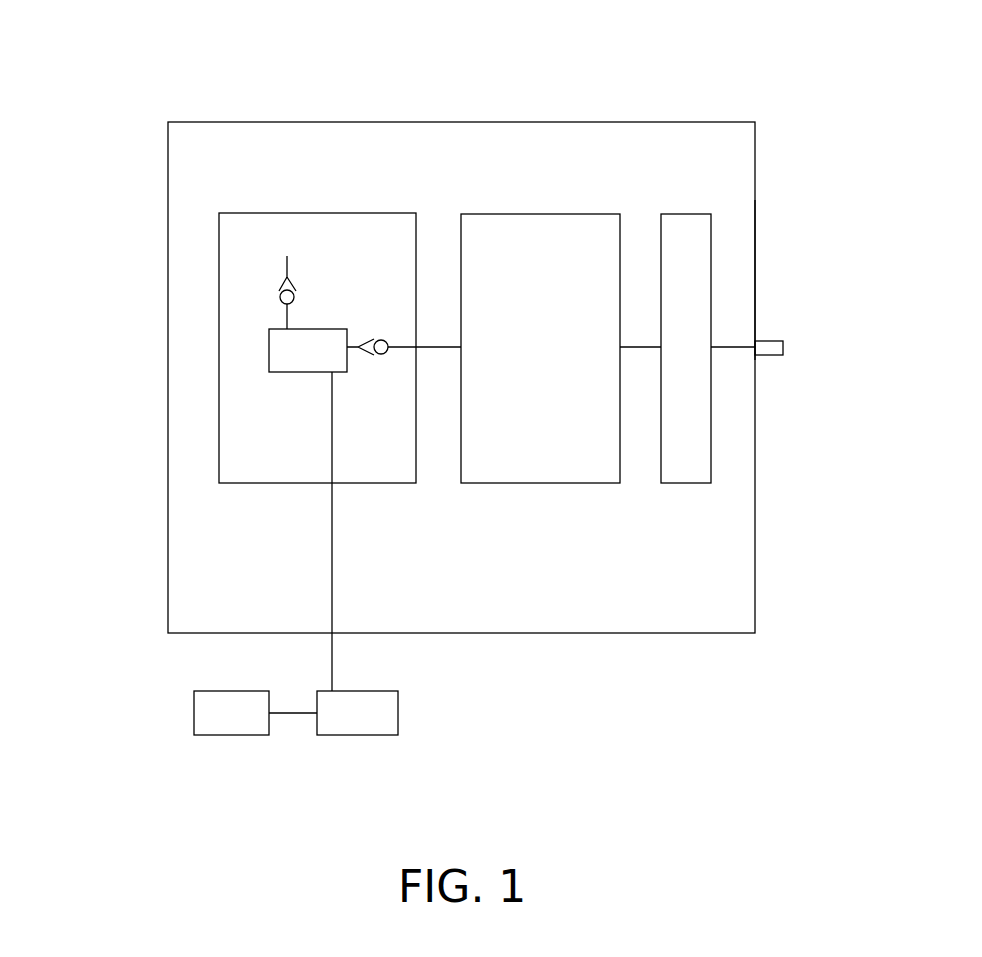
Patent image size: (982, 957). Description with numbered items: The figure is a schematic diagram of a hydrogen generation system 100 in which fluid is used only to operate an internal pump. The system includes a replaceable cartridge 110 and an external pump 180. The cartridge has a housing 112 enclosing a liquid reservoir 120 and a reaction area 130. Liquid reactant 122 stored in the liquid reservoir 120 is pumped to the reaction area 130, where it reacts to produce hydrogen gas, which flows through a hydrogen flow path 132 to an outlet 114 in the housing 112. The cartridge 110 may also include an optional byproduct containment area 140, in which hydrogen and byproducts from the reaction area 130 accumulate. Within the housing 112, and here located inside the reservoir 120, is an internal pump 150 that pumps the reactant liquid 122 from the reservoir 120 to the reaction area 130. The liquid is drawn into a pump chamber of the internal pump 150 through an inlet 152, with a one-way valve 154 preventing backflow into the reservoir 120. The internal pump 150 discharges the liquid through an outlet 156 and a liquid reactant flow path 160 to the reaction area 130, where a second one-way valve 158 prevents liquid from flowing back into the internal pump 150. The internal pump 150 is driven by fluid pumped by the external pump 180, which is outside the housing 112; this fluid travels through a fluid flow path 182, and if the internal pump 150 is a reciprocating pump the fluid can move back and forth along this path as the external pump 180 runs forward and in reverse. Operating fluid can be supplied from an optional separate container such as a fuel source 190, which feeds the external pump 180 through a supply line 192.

The hydrogen generation system 100 is at (327, 102).
The replaceable cartridge 110 is at (460, 122).
The housing 112 is at (758, 280).
The outlet 114 is at (783, 343).
The liquid reservoir 120 is at (273, 213).
The liquid reactant 122 is at (388, 237).
The reaction area 130 is at (488, 214).
The hydrogen flow path 132 is at (637, 347).
The byproduct containment area 140 is at (672, 214).
The internal pump 150 is at (287, 372).
The inlet 152 is at (283, 327).
The one-way valve 154 is at (280, 290).
The outlet 156 is at (349, 355).
The one-way valve 158 is at (373, 336).
The liquid reactant flow path 160 is at (428, 347).
The external pump 180 is at (348, 737).
The fluid flow path 182 is at (332, 610).
The fuel source 190 is at (218, 737).
The supply line 192 is at (288, 714).